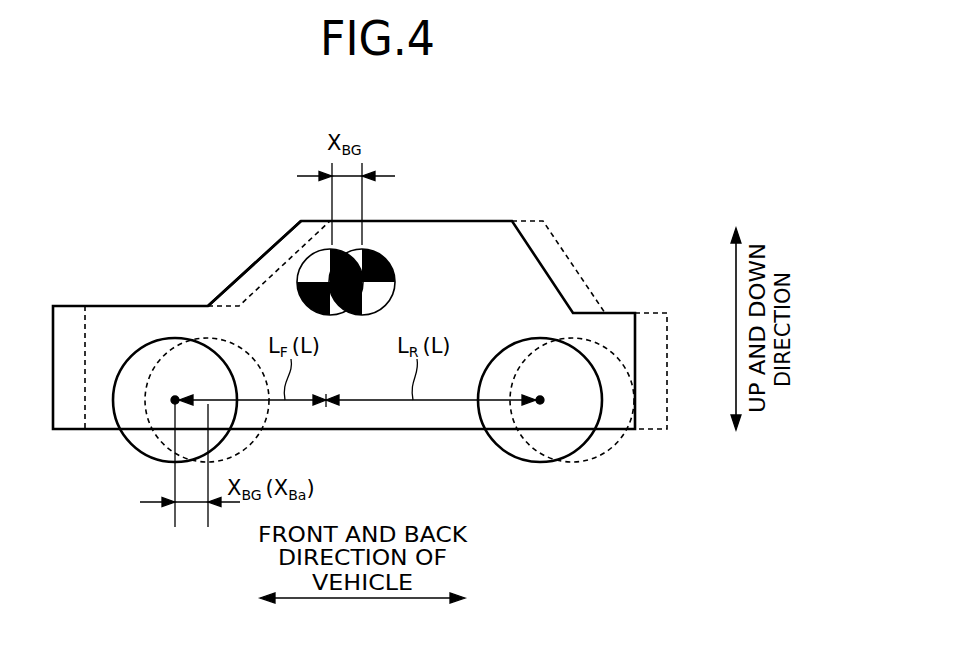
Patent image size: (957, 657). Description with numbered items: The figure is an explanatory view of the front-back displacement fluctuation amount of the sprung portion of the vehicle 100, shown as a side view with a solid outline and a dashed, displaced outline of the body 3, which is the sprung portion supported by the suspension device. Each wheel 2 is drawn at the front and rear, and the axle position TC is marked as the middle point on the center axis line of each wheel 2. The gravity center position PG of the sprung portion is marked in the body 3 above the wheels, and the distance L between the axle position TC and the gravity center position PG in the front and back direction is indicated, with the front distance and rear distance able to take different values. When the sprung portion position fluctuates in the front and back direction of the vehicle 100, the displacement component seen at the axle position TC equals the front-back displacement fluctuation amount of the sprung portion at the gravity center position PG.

The vehicle 100 is at (266, 233).
The body 3 is at (222, 288).
The wheel 2 is at (143, 452).
The gravity center position PG is at (330, 278).
The axle position TC is at (175, 400).